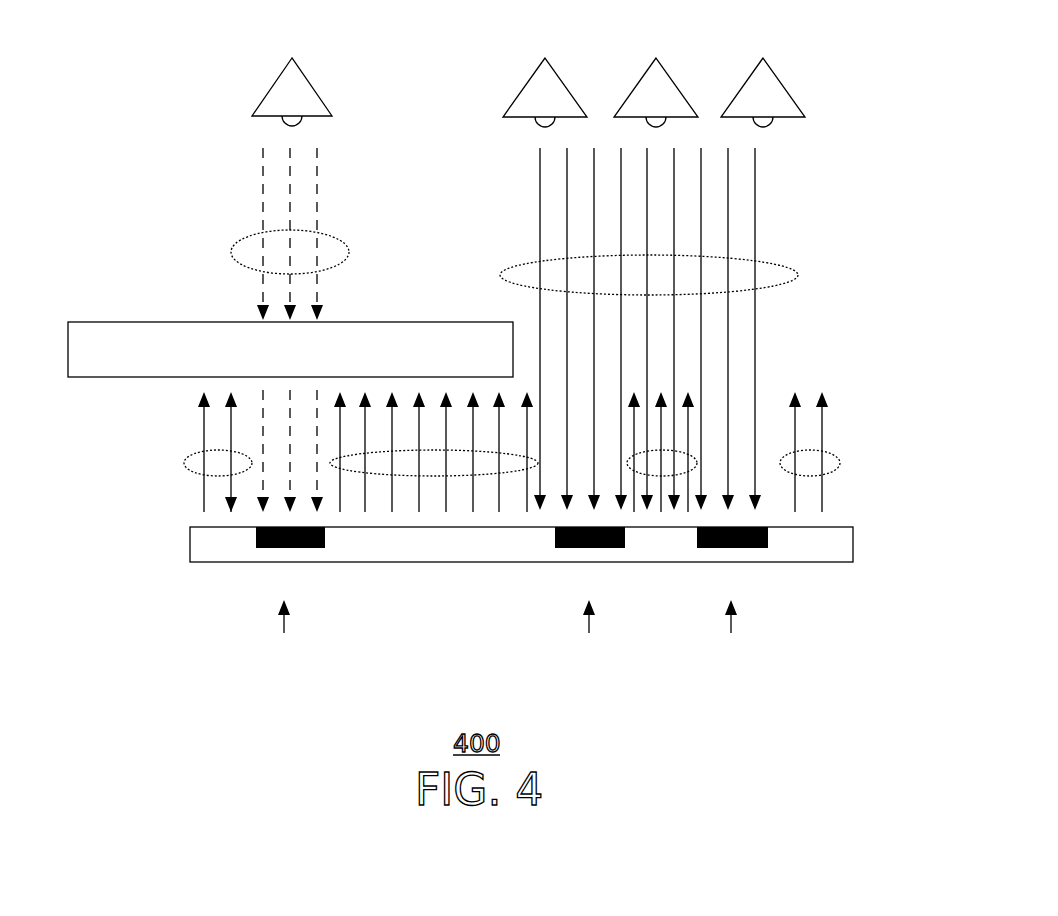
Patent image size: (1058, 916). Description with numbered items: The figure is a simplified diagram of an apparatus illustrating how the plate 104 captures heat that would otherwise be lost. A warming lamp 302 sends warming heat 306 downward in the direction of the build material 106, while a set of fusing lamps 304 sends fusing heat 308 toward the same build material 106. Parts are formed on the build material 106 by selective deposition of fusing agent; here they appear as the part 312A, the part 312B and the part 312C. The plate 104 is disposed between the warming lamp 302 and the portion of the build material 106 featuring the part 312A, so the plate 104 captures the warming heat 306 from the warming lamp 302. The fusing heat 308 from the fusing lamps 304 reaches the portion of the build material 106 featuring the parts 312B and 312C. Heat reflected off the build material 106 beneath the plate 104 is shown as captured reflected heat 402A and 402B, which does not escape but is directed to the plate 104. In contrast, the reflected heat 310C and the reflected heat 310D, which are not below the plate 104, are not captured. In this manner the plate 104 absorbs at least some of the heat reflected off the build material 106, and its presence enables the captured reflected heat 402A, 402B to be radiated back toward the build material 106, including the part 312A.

The plate 104 is at (108, 322).
The build material 106 is at (853, 540).
The warming lamp 302 is at (304, 72).
The fusing lamps 304 is at (772, 72).
The warming heat 306 is at (240, 242).
The fusing heat 308 is at (777, 265).
The reflected heat 310C is at (682, 475).
The reflected heat 310D is at (838, 460).
The part 312A is at (287, 634).
The part 312B is at (592, 634).
The part 312C is at (734, 634).
The captured reflected heat 402A is at (188, 458).
The captured reflected heat 402B is at (432, 477).